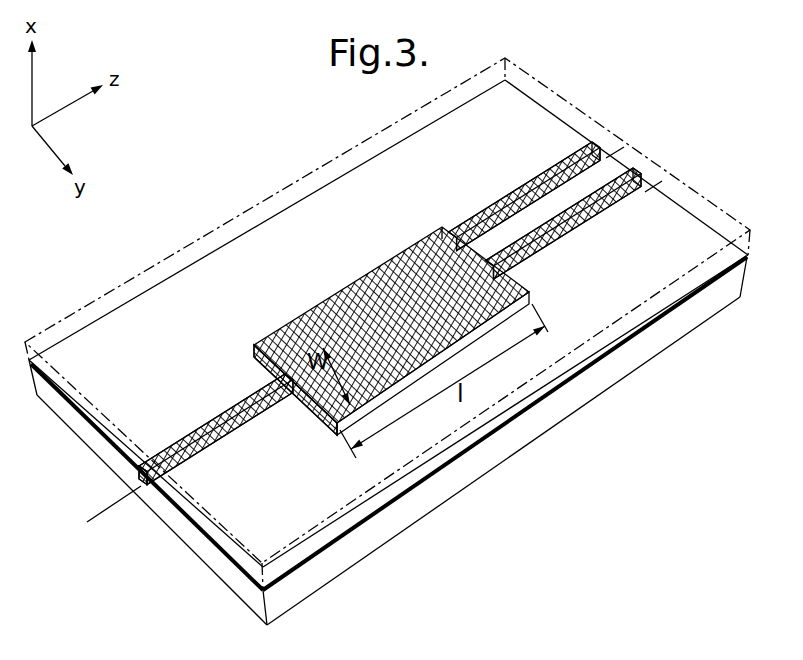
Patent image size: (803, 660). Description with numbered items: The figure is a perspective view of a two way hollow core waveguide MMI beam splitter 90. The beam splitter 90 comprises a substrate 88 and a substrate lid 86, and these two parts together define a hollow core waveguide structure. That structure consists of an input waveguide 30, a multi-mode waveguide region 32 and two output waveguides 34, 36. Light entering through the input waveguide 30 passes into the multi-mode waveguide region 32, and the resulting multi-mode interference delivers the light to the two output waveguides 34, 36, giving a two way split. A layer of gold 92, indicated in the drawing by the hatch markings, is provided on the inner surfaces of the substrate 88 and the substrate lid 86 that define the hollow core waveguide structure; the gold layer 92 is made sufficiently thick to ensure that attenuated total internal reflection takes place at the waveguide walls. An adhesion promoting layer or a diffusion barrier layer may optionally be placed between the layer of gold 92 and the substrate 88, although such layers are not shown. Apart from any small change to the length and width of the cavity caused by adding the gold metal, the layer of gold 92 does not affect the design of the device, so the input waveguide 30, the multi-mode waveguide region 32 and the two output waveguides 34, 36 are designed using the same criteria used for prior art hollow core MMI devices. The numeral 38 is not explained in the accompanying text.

The input waveguide 30 is at (146, 498).
The multi-mode waveguide region 32 is at (317, 327).
The output waveguide 34 is at (592, 145).
The output waveguide 36 is at (640, 180).
The multimode interference region 38 is at (384, 334).
The substrate lid 86 is at (385, 487).
The substrate 88 is at (343, 550).
The hollow core waveguide MMI beam splitter 90 is at (196, 228).
The layer of gold 92 is at (408, 246).